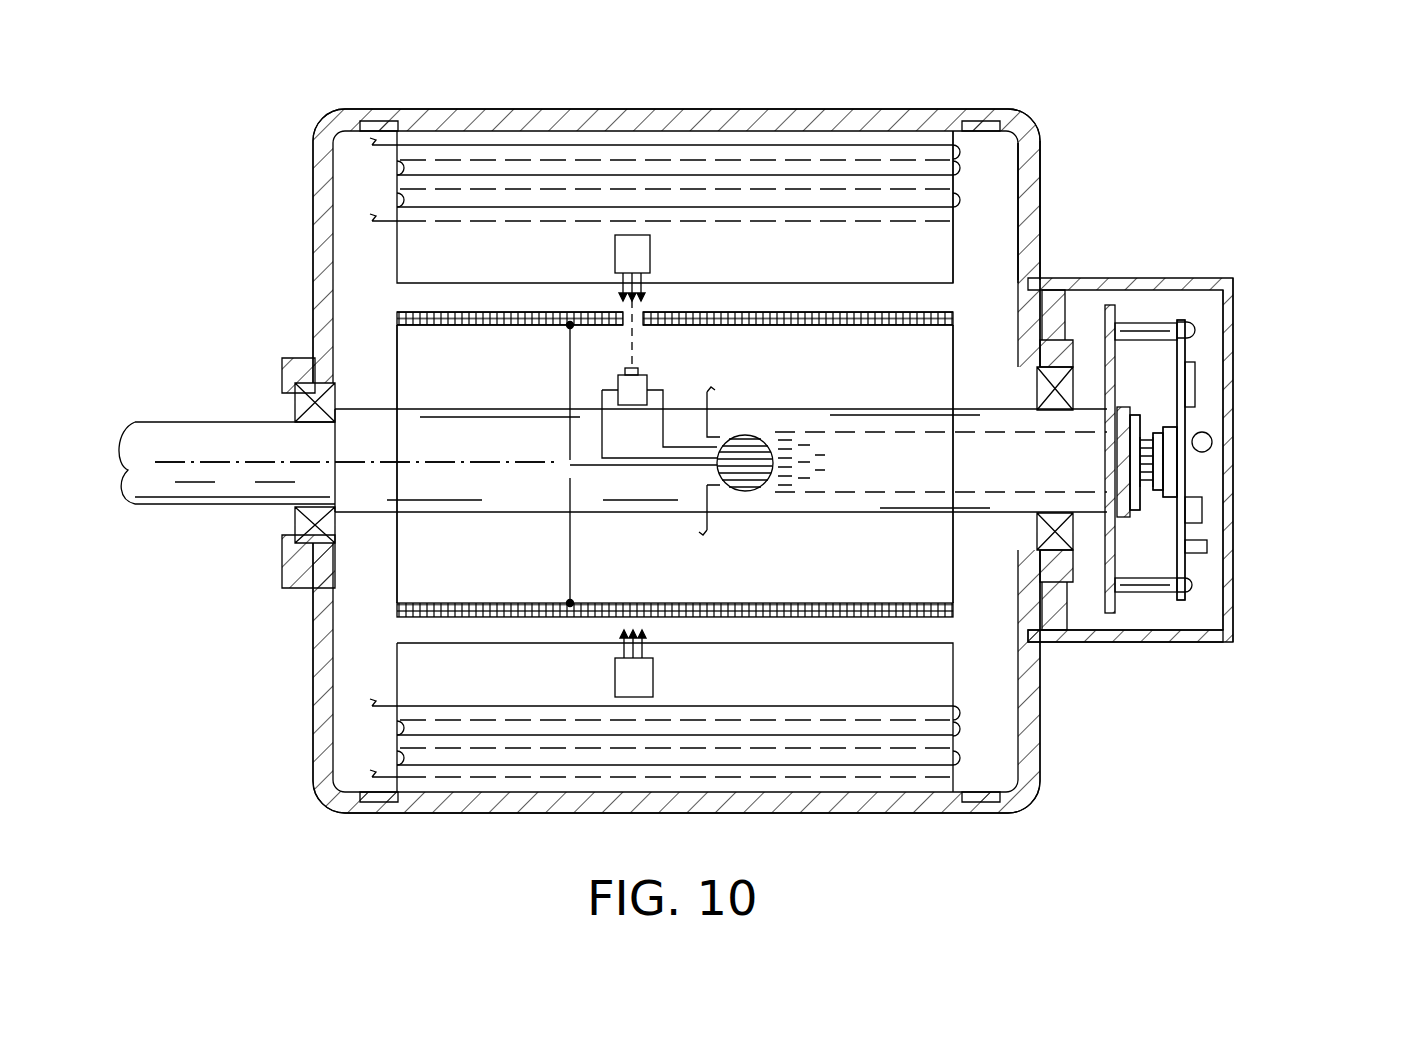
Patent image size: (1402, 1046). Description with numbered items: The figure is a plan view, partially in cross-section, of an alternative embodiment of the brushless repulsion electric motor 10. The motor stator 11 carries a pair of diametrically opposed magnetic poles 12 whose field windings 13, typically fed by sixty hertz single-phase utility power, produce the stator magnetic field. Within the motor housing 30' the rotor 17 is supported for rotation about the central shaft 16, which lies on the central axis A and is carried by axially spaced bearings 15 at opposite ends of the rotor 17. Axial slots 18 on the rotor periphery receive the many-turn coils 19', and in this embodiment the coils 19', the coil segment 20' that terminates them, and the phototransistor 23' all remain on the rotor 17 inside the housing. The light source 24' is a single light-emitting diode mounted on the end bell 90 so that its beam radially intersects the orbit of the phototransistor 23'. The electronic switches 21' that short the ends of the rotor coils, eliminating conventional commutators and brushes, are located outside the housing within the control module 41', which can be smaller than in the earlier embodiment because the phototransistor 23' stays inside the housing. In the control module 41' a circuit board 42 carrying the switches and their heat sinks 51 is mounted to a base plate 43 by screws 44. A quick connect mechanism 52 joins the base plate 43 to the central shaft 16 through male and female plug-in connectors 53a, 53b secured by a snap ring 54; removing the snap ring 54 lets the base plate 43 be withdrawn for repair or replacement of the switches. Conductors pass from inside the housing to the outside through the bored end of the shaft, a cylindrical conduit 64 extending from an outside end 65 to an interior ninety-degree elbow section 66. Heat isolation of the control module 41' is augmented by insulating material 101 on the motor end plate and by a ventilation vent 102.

The electric motor 10 is at (262, 111).
The motor stator 11 is at (970, 162).
The magnetic poles 12 is at (400, 258).
The field windings 13 is at (864, 148).
The bearings 15 is at (300, 405).
The central shaft 16 is at (384, 408).
The rotor 17 is at (390, 598).
The axial slots 18 is at (700, 312).
The coils 19' is at (675, 430).
The coil segment 20' is at (675, 279).
The electronic switches 21' is at (1252, 458).
The phototransistor 23' is at (654, 401).
The light source 24' is at (588, 466).
The motor housing 30' is at (676, 420).
The control module 41' is at (1130, 418).
The circuit board 42 is at (1181, 325).
The base plate 43 is at (1108, 605).
The screws 44 is at (1192, 328).
The heat sink 51 is at (1196, 393).
The quick connect mechanism 52 is at (1127, 522).
The male plug in connector 53a is at (1160, 475).
The female plug in connector 53b is at (1170, 462).
The snap ring 54 is at (1186, 413).
The cylindrical conduit 64 is at (868, 490).
The outside end 65 is at (1138, 503).
The 90° elbow section 66 is at (760, 416).
The end bell 90 is at (1033, 162).
The insulating material 101 is at (1058, 636).
The ventilation vent 102 is at (1233, 332).
The central axis A is at (393, 470).